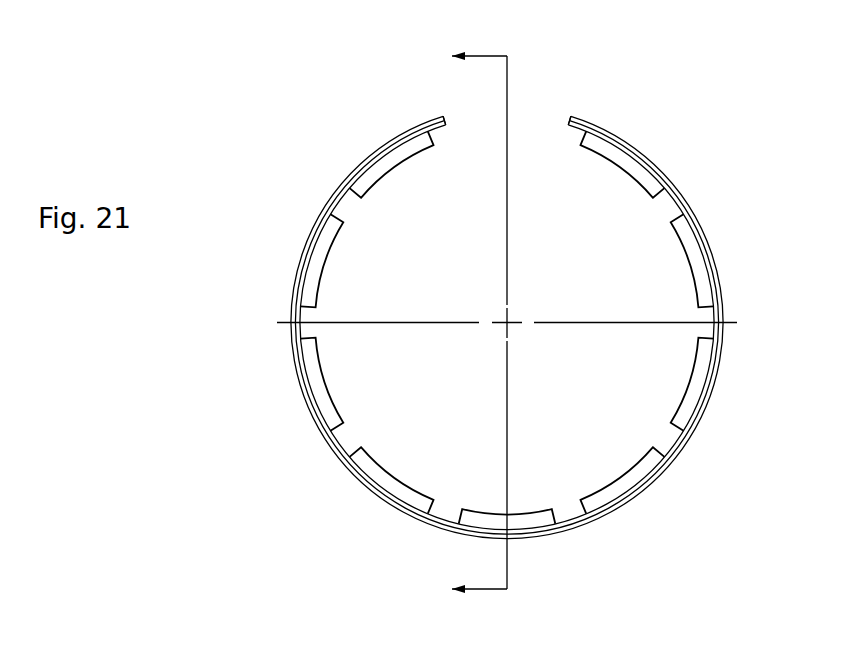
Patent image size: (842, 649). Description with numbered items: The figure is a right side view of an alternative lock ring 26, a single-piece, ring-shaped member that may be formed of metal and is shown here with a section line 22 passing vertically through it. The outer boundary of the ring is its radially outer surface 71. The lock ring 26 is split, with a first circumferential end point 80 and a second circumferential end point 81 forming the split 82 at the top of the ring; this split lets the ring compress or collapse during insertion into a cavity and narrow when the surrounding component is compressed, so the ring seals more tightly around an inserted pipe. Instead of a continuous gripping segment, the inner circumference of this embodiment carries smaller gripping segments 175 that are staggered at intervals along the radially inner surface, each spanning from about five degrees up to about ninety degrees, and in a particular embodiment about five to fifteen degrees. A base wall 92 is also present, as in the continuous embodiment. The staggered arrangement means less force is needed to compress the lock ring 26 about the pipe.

The section line 22- 22 is at (476, 324).
The lock ring 26 is at (454, 289).
The radially outer surface 71 is at (650, 153).
The first circumferential end point 80 is at (449, 122).
The second circumferential end point 81 is at (568, 123).
The split 82 is at (556, 100).
The base wall 92 is at (340, 209).
The gripping segments 175 is at (681, 378).